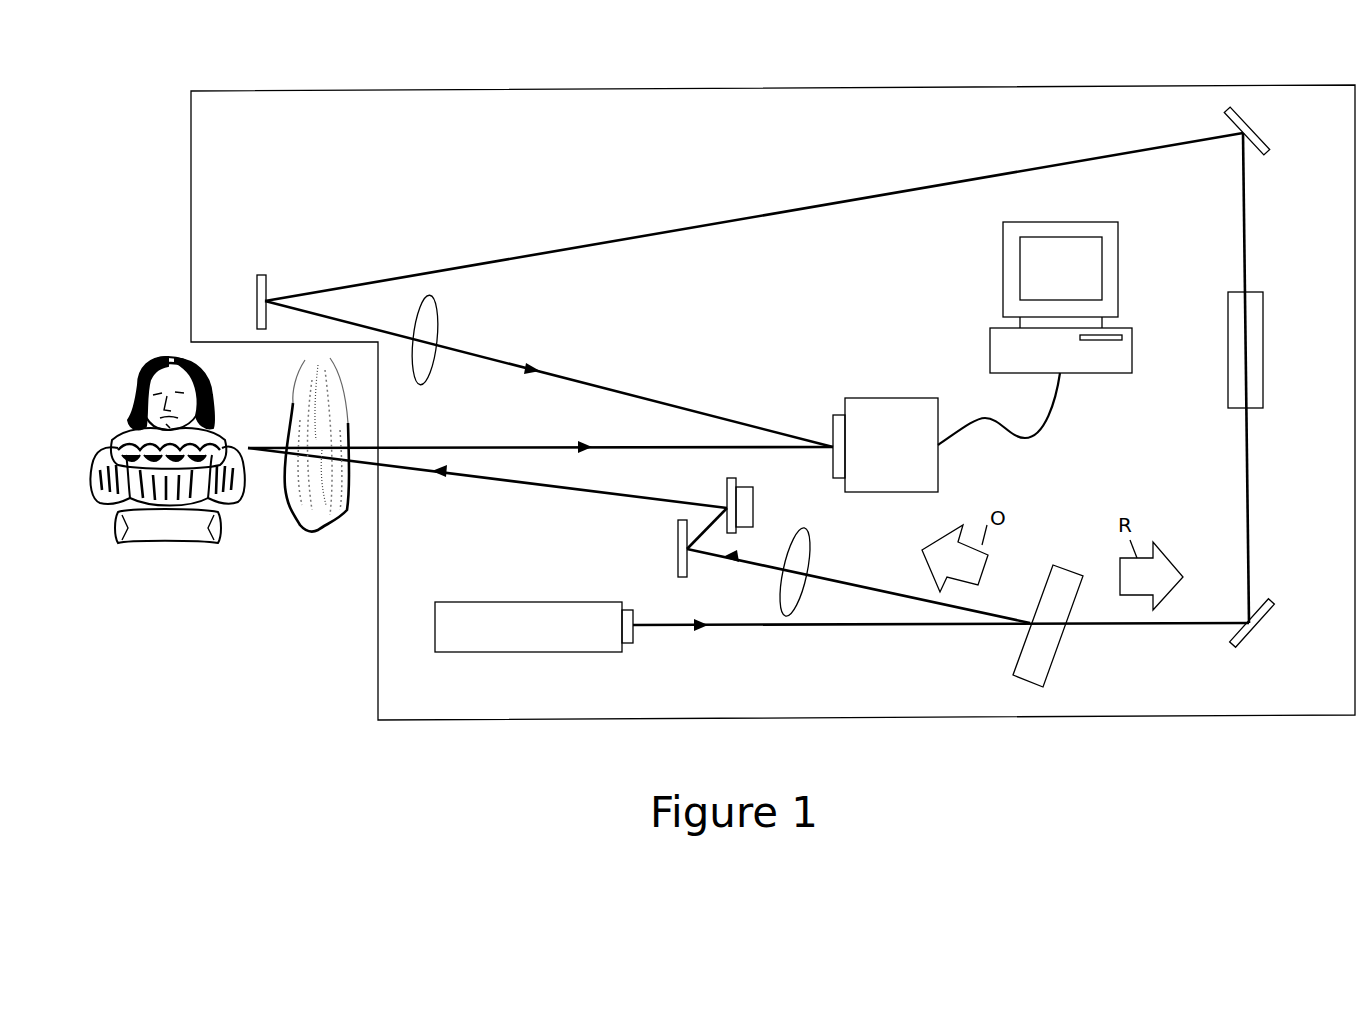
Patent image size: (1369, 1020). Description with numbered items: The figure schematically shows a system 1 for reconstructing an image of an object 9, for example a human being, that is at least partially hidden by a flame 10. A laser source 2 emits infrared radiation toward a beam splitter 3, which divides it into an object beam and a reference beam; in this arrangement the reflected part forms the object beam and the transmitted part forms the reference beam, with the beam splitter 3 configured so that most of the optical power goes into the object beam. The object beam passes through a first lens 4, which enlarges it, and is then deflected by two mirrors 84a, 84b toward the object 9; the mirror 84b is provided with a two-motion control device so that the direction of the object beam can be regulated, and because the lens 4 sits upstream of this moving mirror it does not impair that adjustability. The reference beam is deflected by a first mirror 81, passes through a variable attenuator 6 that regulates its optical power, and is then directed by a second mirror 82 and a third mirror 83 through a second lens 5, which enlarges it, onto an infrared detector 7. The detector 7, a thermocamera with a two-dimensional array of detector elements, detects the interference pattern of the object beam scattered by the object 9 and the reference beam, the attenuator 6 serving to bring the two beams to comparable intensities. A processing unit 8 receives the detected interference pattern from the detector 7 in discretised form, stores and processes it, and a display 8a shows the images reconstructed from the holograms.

The system 1 is at (745, 87).
The laser source 2 is at (525, 653).
The beam splitter 3 is at (1052, 663).
The first lens 4 is at (813, 545).
The second lens 5 is at (438, 319).
The variable attenuator 6 is at (1263, 348).
The infrared detector 7 is at (892, 397).
The processing unit 8 is at (1035, 333).
The display 8a is at (1003, 267).
The first mirror 81 is at (1273, 602).
The second mirror 82 is at (1265, 140).
The third mirror 83 is at (257, 284).
The mirror 84a is at (678, 535).
The mirror 84b is at (755, 503).
The object 9 is at (92, 450).
The flame 10 is at (287, 518).